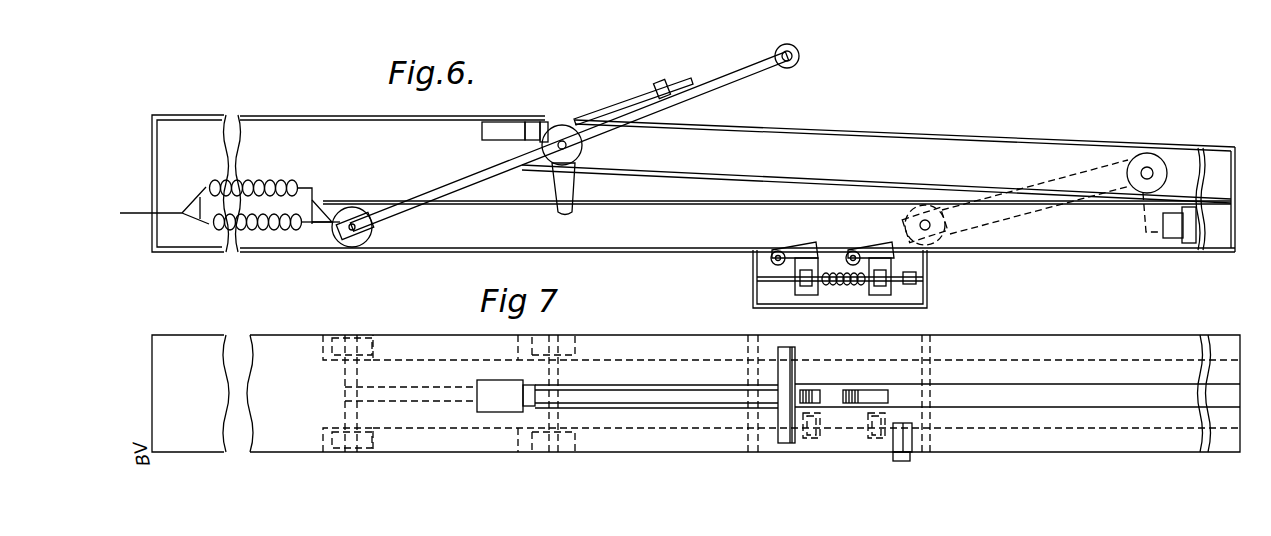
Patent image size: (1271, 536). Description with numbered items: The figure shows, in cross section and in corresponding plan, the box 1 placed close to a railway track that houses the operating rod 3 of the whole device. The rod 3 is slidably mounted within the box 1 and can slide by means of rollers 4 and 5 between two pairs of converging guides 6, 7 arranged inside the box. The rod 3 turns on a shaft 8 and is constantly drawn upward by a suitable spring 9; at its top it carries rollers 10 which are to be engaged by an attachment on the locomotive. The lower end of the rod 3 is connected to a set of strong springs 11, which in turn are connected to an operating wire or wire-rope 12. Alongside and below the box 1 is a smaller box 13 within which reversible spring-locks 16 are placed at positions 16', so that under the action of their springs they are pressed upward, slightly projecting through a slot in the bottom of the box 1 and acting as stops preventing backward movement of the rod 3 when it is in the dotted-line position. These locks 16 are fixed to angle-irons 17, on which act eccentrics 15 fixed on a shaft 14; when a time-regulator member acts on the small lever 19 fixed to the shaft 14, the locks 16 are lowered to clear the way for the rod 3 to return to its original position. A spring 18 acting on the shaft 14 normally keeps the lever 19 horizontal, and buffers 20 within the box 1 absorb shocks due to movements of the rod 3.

In FIG. 6, the box 1 is at (240, 113).
In FIG. 7, the box 1 is at (696, 372).
In FIG. 6, the operating rod 3 is at (720, 74).
In FIG. 6, the rollers 4 is at (352, 246).
In FIG. 7, the rollers 4 is at (362, 342).
In FIG. 6, the rollers 5 is at (562, 130).
In FIG. 7, the rollers 5 is at (565, 341).
In FIG. 6, the converging guides 6 is at (722, 205).
In FIG. 7, the converging guides 6 is at (432, 360).
In FIG. 6, the converging guides 7 is at (768, 178).
In FIG. 7, the converging guides 7 is at (682, 441).
In FIG. 6, the shaft 8 is at (568, 146).
In FIG. 6, the spring 9 is at (628, 101).
In FIG. 6, the rollers 10 is at (800, 56).
In FIG. 7, the rollers 10 is at (778, 346).
In FIG. 6, the strong springs 11 is at (267, 197).
In FIG. 6, the operating wire 12 is at (158, 213).
In FIG. 6, the smaller box 13 is at (928, 300).
In FIG. 6, the shaft 14 is at (765, 281).
In FIG. 6, the eccentrics 15 is at (804, 296).
In FIG. 7, the eccentrics 15 is at (868, 441).
In FIG. 6, the reversible spring-locks 16 is at (836, 237).
In FIG. 7, the reversible spring-locks 16 is at (844, 382).
In FIG. 6, the lock positions 16' is at (824, 240).
In FIG. 6, the angle-irons 17 is at (885, 296).
In FIG. 7, the angle-irons 17 is at (880, 418).
In FIG. 6, the spring 18 is at (862, 283).
In FIG. 6, the small lever 19 is at (916, 277).
In FIG. 7, the small lever 19 is at (903, 462).
In FIG. 6, the buffers 20 is at (492, 122).